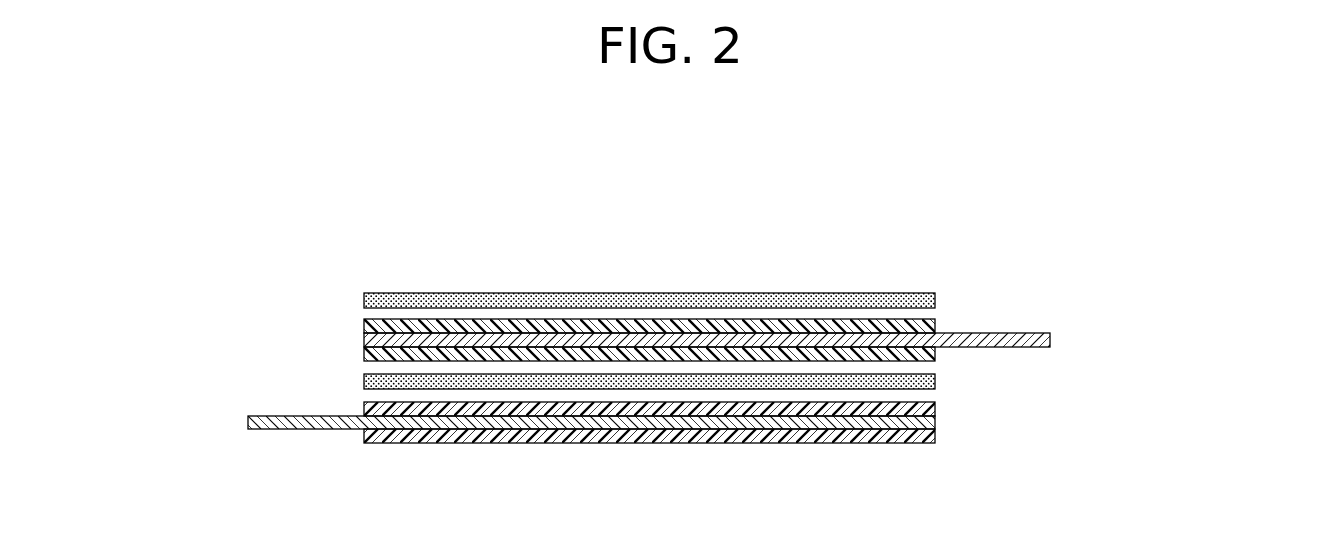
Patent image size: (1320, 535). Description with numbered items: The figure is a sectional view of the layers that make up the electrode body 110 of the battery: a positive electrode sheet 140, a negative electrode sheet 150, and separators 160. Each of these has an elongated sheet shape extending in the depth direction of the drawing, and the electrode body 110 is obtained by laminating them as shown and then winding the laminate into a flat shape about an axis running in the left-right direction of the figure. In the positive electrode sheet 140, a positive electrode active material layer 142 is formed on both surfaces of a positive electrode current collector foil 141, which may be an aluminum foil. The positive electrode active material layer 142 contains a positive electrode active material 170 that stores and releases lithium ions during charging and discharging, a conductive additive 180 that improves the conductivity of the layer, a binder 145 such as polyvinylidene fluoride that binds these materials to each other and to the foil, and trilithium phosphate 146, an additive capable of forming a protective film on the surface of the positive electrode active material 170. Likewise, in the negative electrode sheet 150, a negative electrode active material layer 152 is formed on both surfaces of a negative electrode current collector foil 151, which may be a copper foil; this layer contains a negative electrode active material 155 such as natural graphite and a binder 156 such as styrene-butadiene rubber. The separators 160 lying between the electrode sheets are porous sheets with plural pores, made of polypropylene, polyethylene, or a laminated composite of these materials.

The electrode body 110 is at (876, 246).
The positive electrode sheet 140 is at (1237, 250).
The positive electrode current collector foil 141 is at (1050, 340).
The positive electrode active material layer 142 is at (935, 328).
The binder 145 is at (802, 356).
The trilithium phosphate 146 is at (802, 356).
The positive electrode active material 170 is at (802, 356).
The conductive additive 180 is at (802, 356).
The negative electrode sheet 150 is at (102, 322).
The negative electrode current collector foil 151 is at (250, 422).
The negative electrode active material layer 152 is at (364, 407).
The negative electrode active material 155 is at (518, 429).
The binder 156 is at (551, 429).
The separator 160 is at (364, 380).